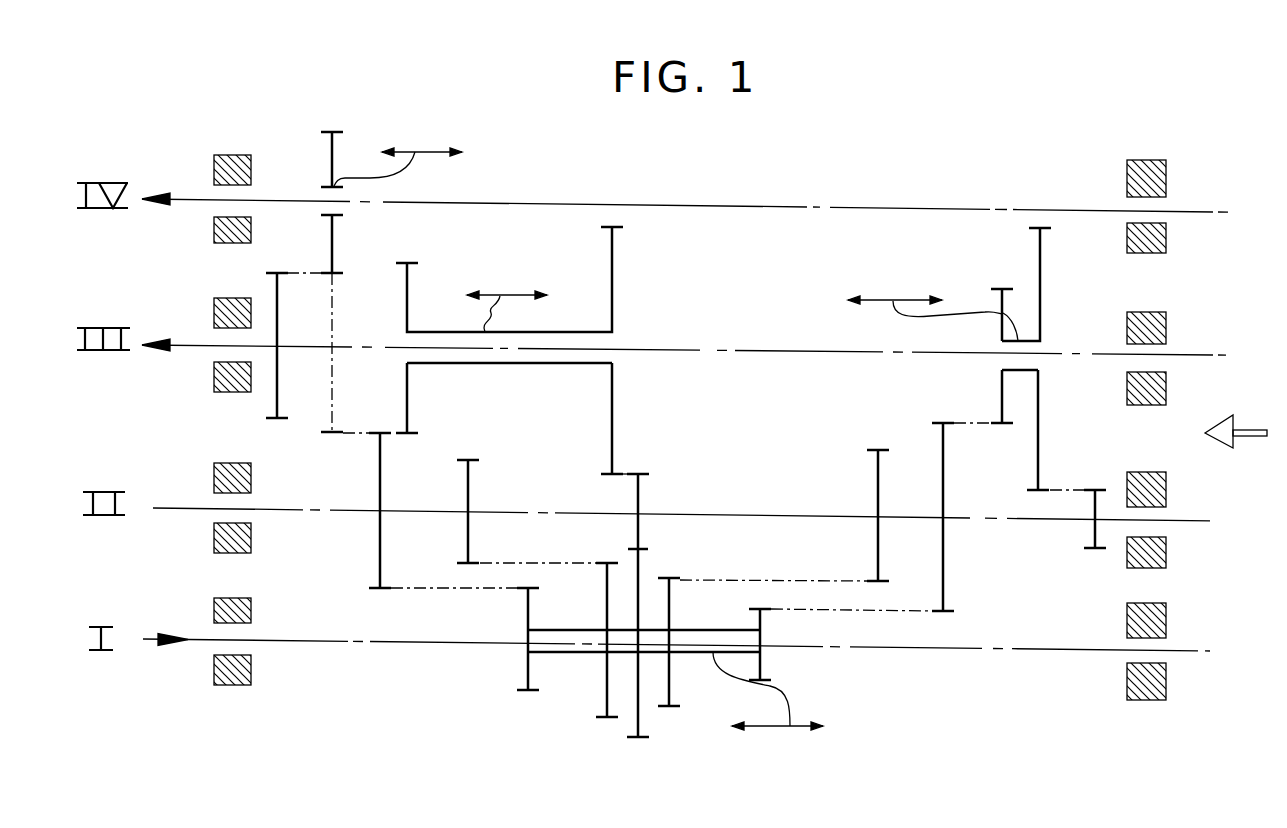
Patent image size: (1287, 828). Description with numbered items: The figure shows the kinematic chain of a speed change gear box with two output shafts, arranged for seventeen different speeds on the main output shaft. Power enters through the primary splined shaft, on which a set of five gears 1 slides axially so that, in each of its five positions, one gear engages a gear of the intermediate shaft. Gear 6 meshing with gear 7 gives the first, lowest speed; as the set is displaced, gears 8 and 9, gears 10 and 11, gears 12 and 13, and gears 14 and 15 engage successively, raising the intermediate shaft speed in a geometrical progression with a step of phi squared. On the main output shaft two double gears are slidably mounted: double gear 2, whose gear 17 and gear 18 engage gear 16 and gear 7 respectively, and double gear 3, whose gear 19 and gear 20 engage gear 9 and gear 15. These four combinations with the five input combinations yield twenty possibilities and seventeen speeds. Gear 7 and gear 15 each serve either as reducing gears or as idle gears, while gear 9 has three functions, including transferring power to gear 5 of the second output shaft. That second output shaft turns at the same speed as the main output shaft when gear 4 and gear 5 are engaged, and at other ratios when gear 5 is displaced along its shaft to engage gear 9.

The set of five gears 1 is at (570, 655).
The double gear 2 is at (1038, 388).
The double gear 3 is at (512, 363).
The gear 4 is at (277, 390).
The gear 5 is at (332, 158).
The gear 6 is at (770, 665).
The gear 7 is at (943, 575).
The gear 8 is at (528, 668).
The gear 9 is at (380, 557).
The gear 10 is at (669, 598).
The gear 11 is at (878, 477).
The gear 12 is at (607, 597).
The gear 13 is at (468, 487).
The gear 14 is at (638, 565).
The gear 15 is at (638, 495).
The gear 16 is at (1095, 537).
The gear 17 is at (1038, 438).
The gear 18 is at (1002, 398).
The gear 19 is at (407, 410).
The gear 20 is at (612, 418).